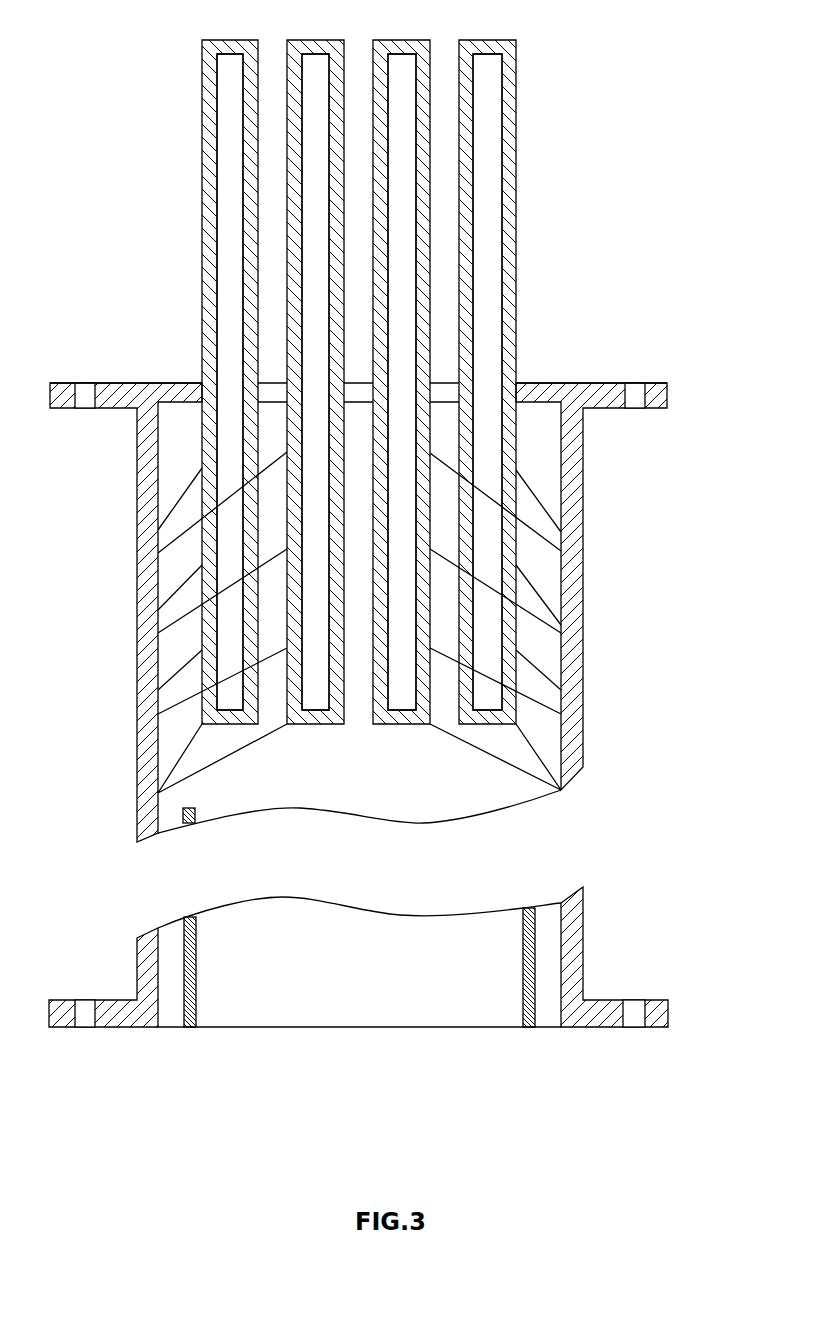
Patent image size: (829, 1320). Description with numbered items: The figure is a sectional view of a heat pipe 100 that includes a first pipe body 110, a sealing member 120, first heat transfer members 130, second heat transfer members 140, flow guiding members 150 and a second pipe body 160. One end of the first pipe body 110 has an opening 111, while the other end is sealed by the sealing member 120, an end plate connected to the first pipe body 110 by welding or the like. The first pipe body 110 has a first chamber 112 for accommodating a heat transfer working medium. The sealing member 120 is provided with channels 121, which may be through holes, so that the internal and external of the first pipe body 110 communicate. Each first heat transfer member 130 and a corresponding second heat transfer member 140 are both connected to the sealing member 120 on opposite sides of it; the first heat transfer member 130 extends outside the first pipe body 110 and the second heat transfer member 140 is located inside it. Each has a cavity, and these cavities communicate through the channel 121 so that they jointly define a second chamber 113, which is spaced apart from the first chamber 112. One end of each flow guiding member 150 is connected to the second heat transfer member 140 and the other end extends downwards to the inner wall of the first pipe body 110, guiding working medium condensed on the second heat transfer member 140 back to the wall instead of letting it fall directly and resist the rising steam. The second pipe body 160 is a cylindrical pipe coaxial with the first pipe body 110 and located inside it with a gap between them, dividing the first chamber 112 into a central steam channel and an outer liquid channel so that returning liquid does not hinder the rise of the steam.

The heat pipe 100 is at (397, 441).
The first pipe body 110 is at (583, 520).
The opening 111 is at (517, 1027).
The first chamber 112 is at (503, 931).
The second chamber 113 is at (487, 302).
The sealing member 120 is at (552, 382).
The channel 121 is at (490, 388).
The first heat transfer member 130 is at (515, 235).
The second heat transfer member 140 is at (518, 632).
The flow guiding member 150 is at (535, 662).
The second pipe body 160 is at (530, 985).